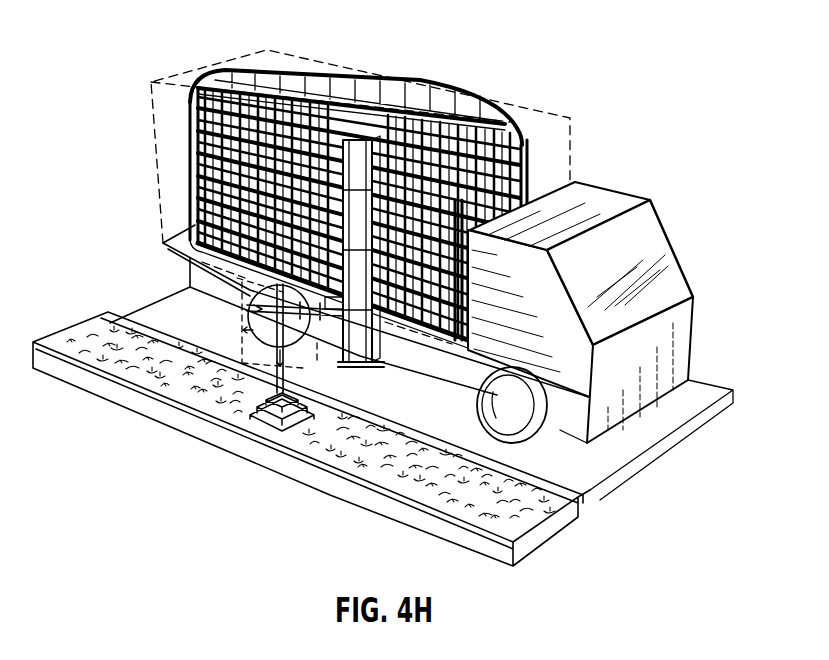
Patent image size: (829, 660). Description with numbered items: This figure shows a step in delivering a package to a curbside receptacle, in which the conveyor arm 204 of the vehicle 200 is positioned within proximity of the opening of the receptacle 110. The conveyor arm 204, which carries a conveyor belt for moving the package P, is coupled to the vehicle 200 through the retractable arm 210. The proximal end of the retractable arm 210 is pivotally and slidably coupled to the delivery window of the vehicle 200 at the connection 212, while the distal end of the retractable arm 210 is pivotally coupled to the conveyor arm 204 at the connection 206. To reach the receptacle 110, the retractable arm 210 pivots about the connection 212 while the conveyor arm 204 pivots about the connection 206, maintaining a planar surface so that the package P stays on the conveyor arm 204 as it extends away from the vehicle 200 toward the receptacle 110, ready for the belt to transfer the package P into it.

The receptacle 110 is at (248, 362).
The vehicle 200 is at (605, 158).
The conveyor arm 204 is at (322, 303).
The connection 206 is at (352, 310).
The retractable arm 210 is at (300, 373).
The connection 212 is at (380, 323).
The package P is at (335, 303).